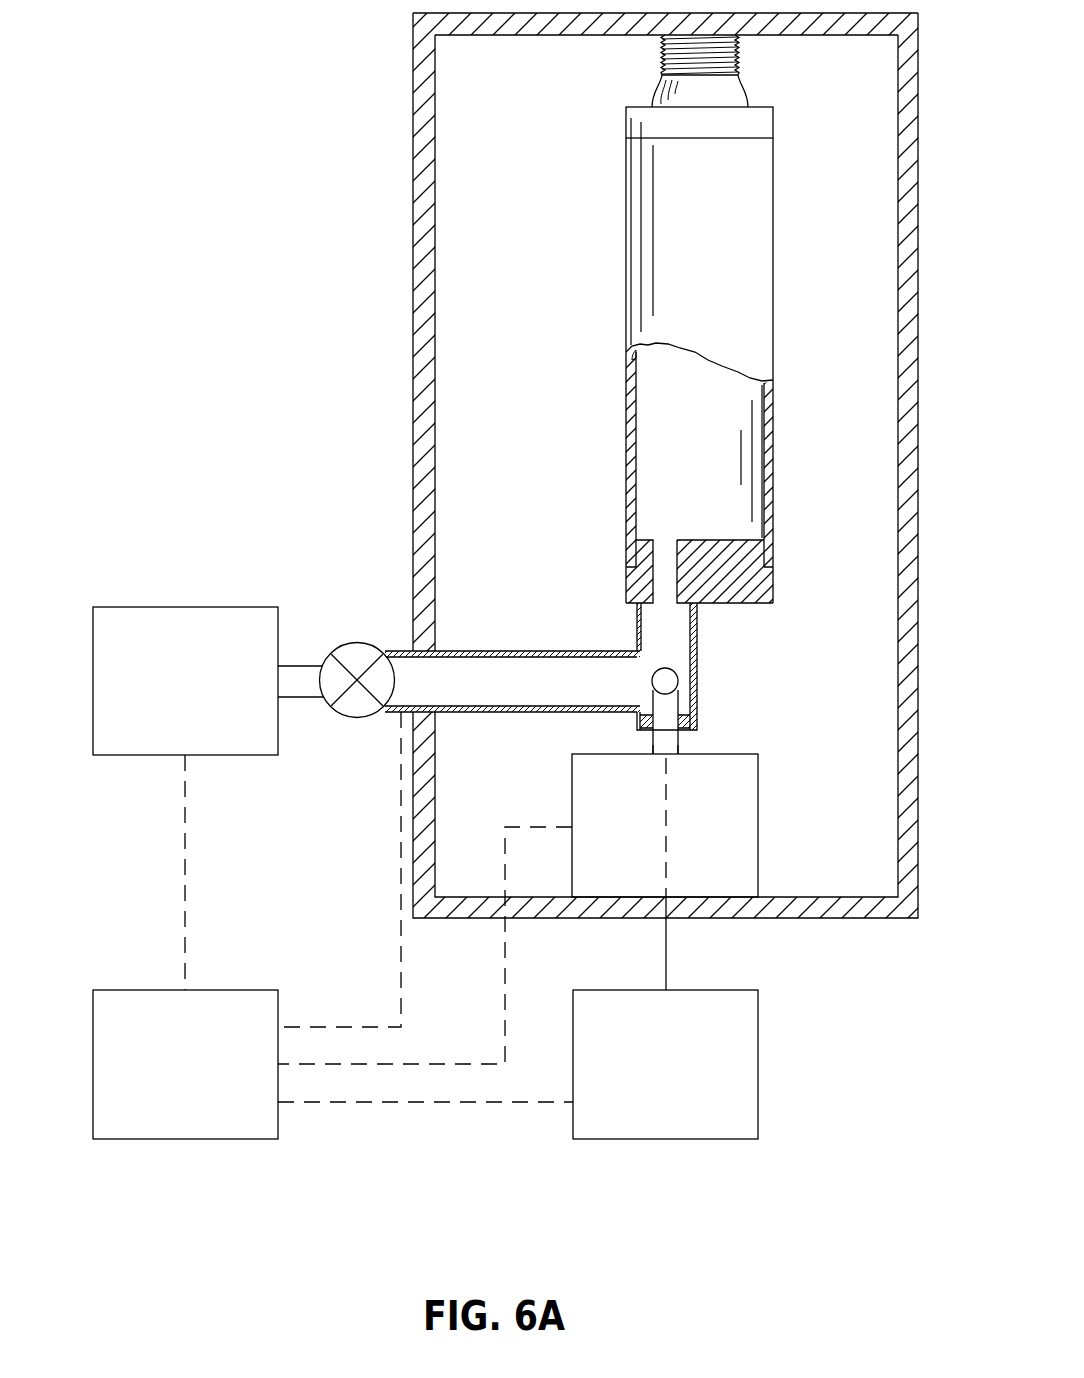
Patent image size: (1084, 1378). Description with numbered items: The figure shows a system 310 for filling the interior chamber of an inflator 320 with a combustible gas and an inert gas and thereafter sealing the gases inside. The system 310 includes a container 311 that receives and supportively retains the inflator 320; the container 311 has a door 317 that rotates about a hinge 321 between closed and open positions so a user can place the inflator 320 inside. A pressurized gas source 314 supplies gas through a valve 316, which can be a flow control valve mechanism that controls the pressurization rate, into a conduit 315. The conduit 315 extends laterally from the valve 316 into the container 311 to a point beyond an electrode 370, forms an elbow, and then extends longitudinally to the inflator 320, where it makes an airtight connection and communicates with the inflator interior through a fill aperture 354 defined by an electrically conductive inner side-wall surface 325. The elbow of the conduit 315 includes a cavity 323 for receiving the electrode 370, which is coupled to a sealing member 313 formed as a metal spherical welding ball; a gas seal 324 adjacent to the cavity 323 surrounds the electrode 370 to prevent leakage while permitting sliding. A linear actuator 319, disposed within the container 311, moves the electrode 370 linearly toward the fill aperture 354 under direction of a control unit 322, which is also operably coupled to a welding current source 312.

The system 310 is at (238, 1210).
The container 311 is at (410, 853).
The welding current source 312 is at (666, 1139).
The sealing member 313 is at (684, 680).
The pressurized gas source 314 is at (138, 755).
The conduit 315 is at (606, 713).
The valve 316 is at (352, 641).
The door 317 is at (427, 172).
The linear actuator 319 is at (572, 805).
The inflator 320 is at (636, 252).
The hinge 321 is at (425, 27).
The control unit 322 is at (185, 1139).
The cavity 323 is at (650, 752).
The gas seal 324 is at (692, 717).
The inner side-wall surface 325 is at (673, 602).
The fill aperture 354 is at (662, 594).
The electrode 370 is at (684, 743).